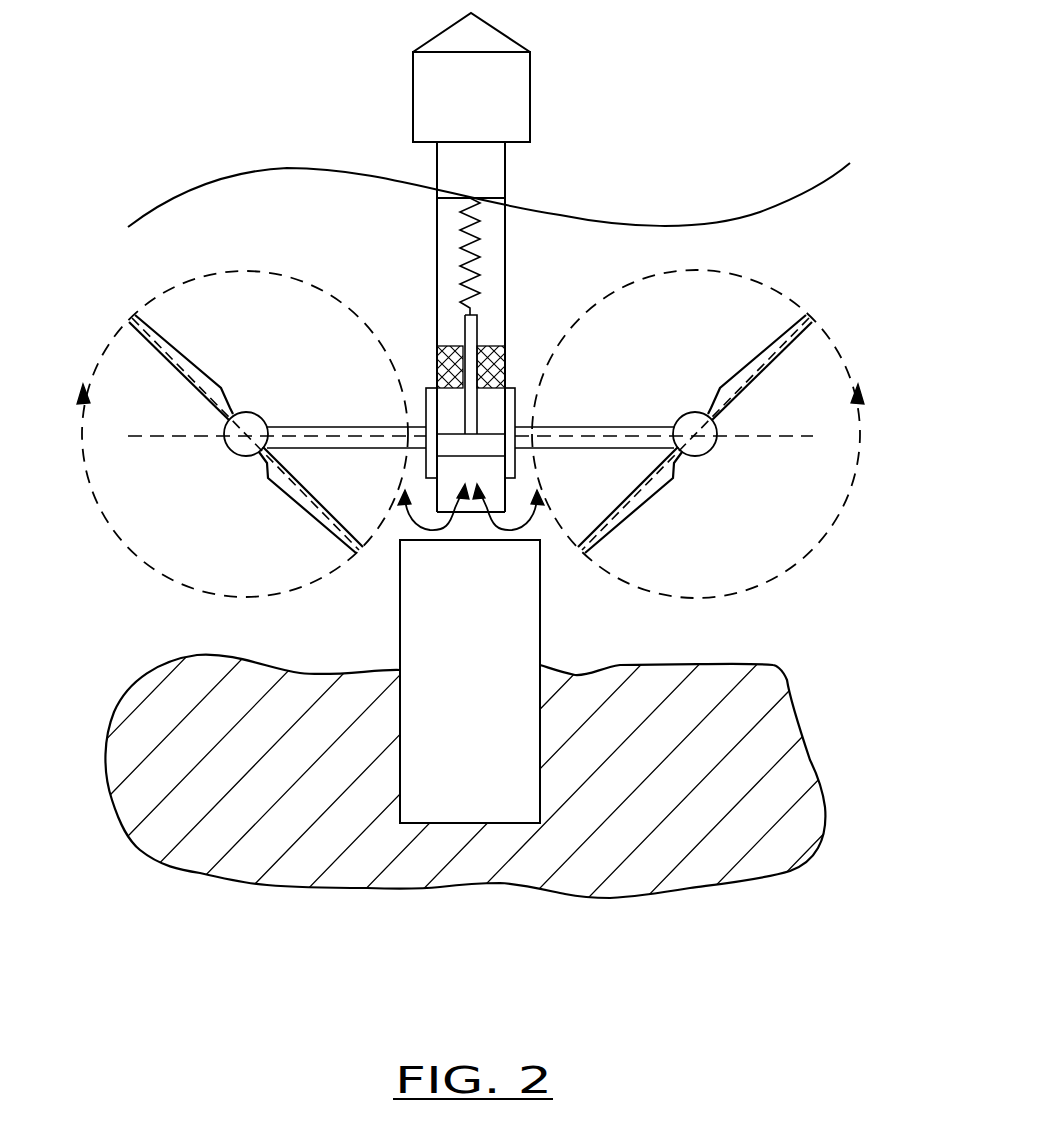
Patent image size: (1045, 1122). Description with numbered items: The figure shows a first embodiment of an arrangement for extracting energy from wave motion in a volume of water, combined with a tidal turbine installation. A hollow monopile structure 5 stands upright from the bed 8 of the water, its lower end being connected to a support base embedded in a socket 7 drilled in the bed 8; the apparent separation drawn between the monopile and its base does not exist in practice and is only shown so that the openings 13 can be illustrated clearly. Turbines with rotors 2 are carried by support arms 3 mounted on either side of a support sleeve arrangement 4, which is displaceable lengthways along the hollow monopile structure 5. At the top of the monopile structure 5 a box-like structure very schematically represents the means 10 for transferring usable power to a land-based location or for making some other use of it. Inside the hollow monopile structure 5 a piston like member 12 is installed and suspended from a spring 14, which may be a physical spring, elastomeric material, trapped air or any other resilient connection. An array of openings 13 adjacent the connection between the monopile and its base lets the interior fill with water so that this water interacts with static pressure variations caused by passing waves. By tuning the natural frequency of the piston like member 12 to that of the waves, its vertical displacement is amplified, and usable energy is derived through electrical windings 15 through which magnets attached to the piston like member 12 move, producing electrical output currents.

The rotor 2 is at (155, 358).
The support arm 3 is at (600, 430).
The support sleeve arrangement 4 is at (510, 397).
The hollow monopile structure 5 is at (500, 167).
The socket 7 is at (490, 805).
The bed 8 is at (808, 762).
The means for facilitating power transfer 10 is at (438, 102).
The piston like member 12 is at (453, 443).
The openings 13 is at (420, 520).
The spring 14 is at (460, 237).
The electrical windings 15 is at (437, 356).